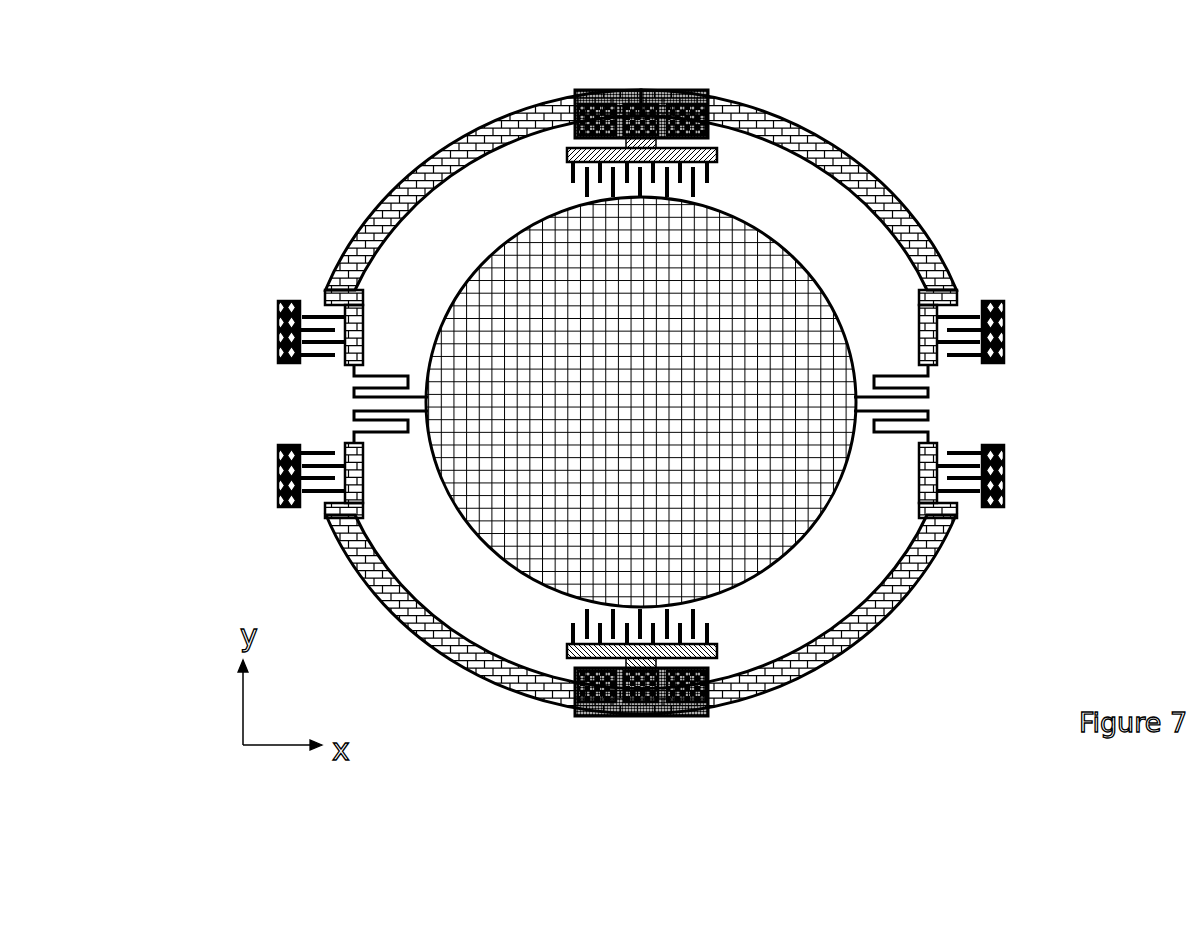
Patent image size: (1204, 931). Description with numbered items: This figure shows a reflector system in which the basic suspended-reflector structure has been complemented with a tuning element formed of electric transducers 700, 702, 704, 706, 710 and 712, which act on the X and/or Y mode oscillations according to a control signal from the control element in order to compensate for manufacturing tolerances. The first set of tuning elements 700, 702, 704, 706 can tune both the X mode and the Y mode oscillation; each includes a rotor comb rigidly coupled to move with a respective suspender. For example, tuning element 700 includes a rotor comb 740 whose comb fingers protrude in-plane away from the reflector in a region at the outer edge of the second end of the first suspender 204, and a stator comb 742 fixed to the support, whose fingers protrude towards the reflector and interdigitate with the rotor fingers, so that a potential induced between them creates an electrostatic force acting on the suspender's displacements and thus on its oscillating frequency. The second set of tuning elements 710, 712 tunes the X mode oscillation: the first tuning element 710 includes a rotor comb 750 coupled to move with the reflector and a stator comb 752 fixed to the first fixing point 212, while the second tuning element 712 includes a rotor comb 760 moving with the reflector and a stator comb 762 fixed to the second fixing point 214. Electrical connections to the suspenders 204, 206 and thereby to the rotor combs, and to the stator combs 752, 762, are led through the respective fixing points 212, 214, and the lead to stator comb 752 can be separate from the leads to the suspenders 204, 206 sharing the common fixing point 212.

The first suspender 204 is at (895, 185).
The second suspender 206 is at (392, 186).
The first fixing point 212 is at (640, 90).
The second fixing point 214 is at (657, 716).
The tuning element 700 is at (1005, 347).
The tuning element 702 is at (278, 334).
The tuning element 704 is at (278, 478).
The tuning element 706 is at (1005, 468).
The first tuning element 710 is at (636, 160).
The second tuning element 712 is at (550, 700).
The rotor comb 740 is at (960, 305).
The stator comb 742 is at (955, 358).
The rotor comb 750 is at (570, 177).
The stator comb 752 is at (583, 195).
The rotor comb 760 is at (690, 612).
The stator comb 762 is at (740, 665).